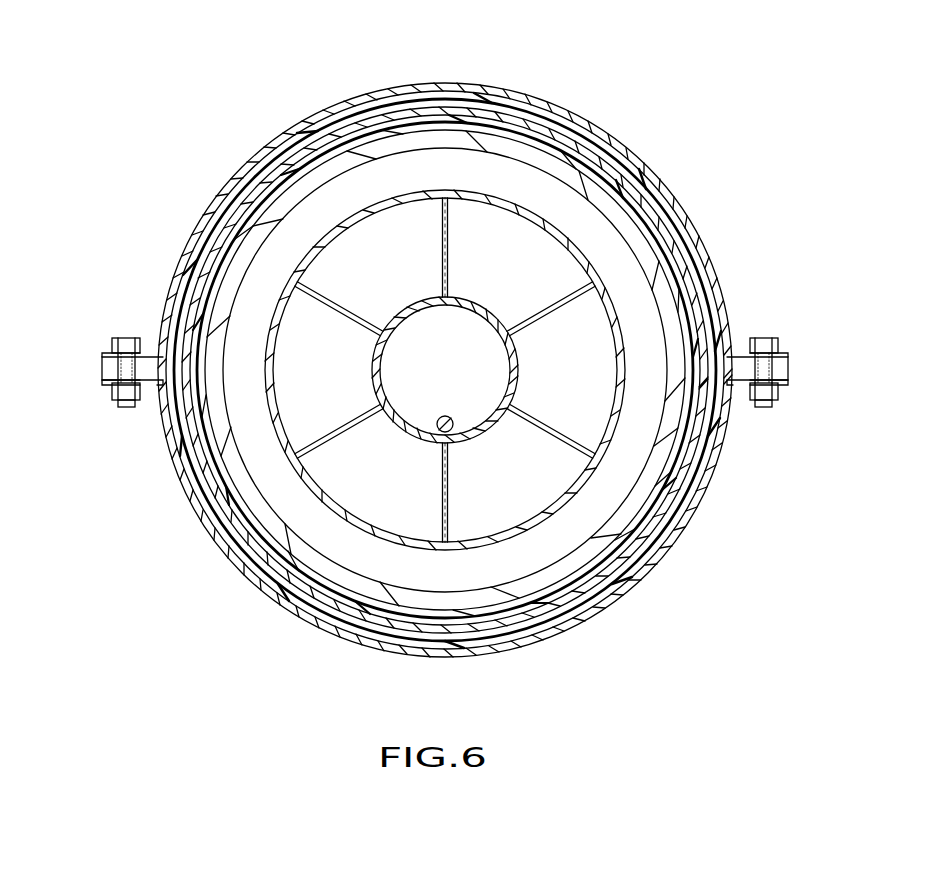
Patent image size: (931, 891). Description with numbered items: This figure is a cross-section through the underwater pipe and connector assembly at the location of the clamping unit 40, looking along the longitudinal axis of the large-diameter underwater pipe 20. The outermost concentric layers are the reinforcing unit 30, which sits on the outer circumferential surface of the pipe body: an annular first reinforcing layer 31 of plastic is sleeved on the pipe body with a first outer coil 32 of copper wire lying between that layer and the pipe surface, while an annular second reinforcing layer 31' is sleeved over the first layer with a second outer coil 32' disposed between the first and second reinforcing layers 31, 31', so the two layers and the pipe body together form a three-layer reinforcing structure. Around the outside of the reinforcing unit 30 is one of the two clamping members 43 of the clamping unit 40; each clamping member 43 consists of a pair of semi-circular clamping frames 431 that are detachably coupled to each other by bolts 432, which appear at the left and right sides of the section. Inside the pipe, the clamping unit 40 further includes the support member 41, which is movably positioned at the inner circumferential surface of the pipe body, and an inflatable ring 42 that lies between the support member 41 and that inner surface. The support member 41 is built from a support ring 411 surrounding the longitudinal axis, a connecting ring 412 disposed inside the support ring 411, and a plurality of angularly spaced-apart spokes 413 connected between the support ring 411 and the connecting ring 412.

The large-diameter underwater pipe 20 is at (217, 308).
The reinforcing unit 30 is at (424, 354).
The first reinforcing layer 31 is at (445, 361).
The second reinforcing layer 31' is at (447, 370).
The first outer coil 32 is at (445, 330).
The second outer coil 32' is at (445, 370).
The clamping unit 40 is at (462, 303).
The support member 41 is at (593, 260).
The support ring 411 is at (396, 190).
The connecting ring 412 is at (398, 304).
The spokes 413 is at (446, 416).
The inflatable ring 42 is at (520, 178).
The clamping member 43 is at (445, 354).
The semi-circular clamping frame 431 is at (648, 565).
The bolts 432 is at (762, 343).